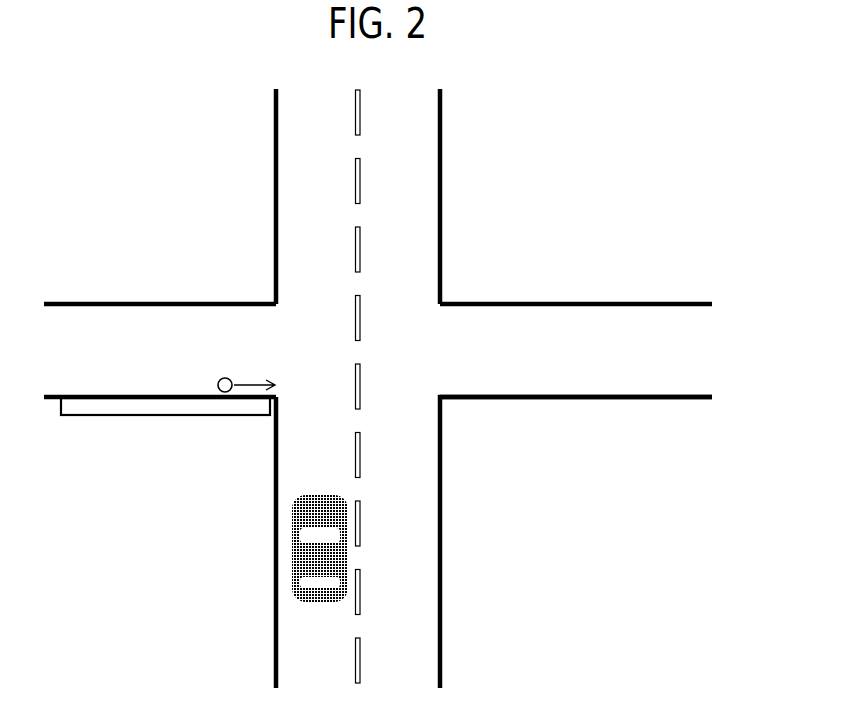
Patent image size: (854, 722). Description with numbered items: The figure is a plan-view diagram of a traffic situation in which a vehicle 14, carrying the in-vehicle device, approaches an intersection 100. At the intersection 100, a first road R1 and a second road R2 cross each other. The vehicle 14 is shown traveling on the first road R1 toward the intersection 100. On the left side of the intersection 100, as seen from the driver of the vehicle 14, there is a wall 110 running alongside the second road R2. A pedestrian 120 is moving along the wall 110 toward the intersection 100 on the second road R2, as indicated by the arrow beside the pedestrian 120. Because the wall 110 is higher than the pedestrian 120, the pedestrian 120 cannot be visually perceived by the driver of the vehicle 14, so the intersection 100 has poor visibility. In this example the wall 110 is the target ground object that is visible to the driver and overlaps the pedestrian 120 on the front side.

The vehicle 14 is at (314, 612).
The intersection 100 is at (490, 443).
The wall 110 is at (97, 410).
The pedestrian 120 is at (228, 378).
The first road R1 is at (407, 612).
The second road R2 is at (125, 332).